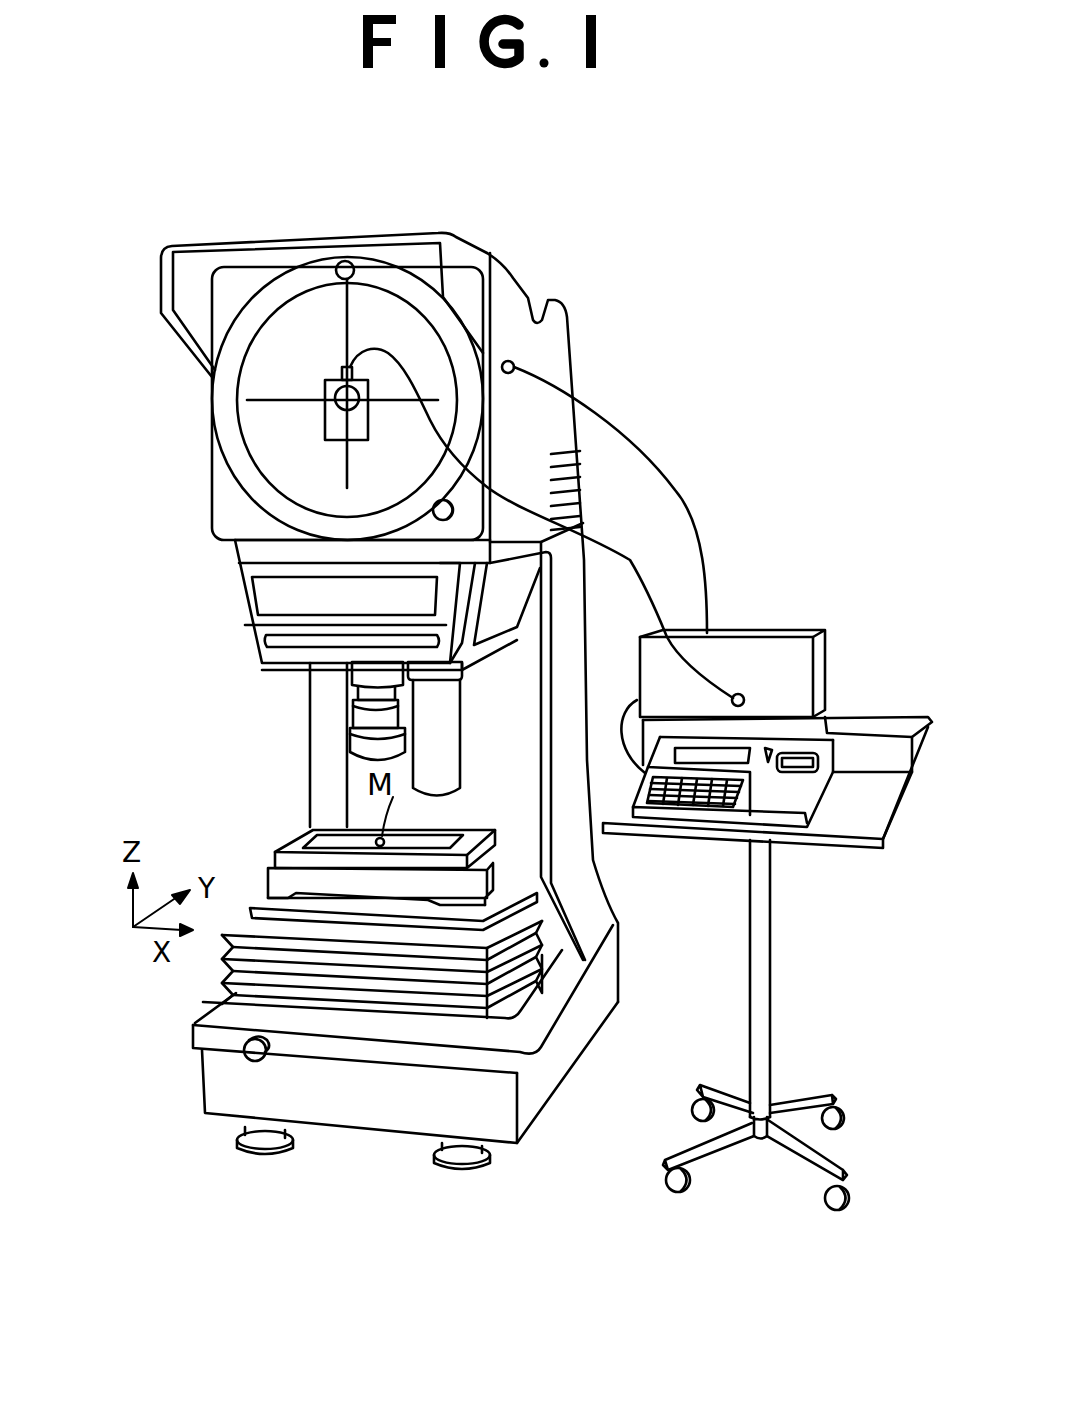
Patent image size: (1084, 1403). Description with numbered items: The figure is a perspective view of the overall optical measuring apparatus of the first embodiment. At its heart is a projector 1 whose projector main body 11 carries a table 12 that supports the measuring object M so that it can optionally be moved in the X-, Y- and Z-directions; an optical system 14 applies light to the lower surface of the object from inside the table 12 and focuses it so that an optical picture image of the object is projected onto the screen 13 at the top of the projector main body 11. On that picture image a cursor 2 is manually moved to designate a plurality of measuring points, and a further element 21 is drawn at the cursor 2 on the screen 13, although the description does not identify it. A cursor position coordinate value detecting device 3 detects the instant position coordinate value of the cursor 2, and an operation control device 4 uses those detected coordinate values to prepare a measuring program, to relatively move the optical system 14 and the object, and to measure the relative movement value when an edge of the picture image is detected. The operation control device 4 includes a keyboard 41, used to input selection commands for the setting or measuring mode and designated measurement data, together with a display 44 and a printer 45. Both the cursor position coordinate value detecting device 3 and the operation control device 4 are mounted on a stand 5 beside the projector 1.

The projector 1 is at (237, 596).
The cursor 2 is at (330, 430).
The cursor position coordinate value detecting device 3 is at (800, 633).
The operation control device 4 is at (782, 800).
The stand 5 is at (762, 1013).
The projector main body 11 is at (317, 698).
The table 12 is at (312, 843).
The screen 13 is at (305, 315).
The optical system 14 is at (365, 747).
The edge sensor 21 is at (340, 443).
The keyboard 41 is at (684, 803).
The display 44 is at (737, 757).
The printer 45 is at (810, 763).